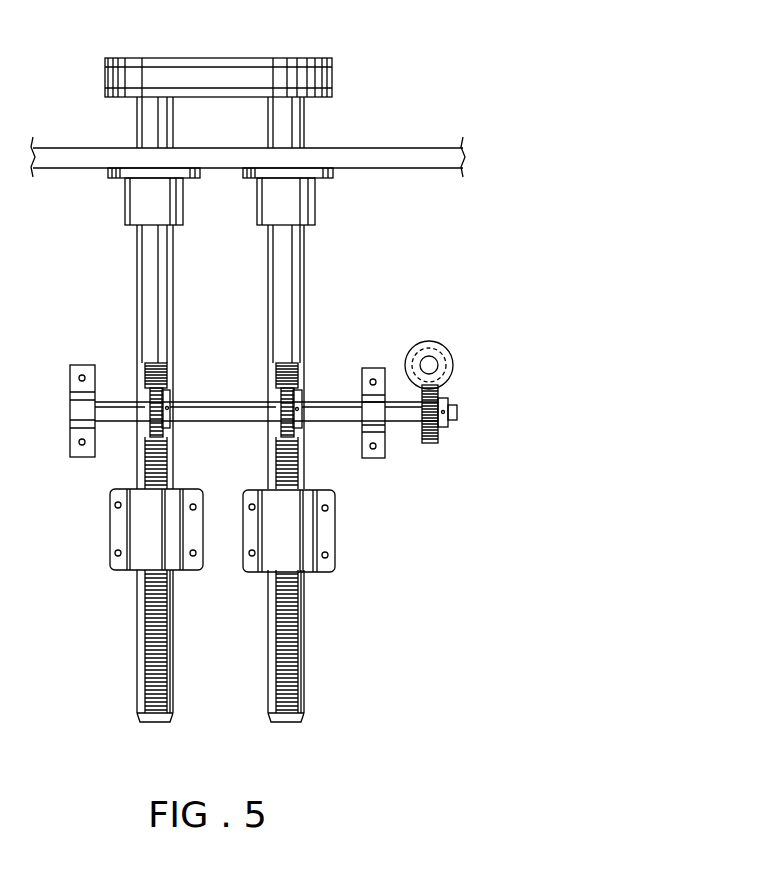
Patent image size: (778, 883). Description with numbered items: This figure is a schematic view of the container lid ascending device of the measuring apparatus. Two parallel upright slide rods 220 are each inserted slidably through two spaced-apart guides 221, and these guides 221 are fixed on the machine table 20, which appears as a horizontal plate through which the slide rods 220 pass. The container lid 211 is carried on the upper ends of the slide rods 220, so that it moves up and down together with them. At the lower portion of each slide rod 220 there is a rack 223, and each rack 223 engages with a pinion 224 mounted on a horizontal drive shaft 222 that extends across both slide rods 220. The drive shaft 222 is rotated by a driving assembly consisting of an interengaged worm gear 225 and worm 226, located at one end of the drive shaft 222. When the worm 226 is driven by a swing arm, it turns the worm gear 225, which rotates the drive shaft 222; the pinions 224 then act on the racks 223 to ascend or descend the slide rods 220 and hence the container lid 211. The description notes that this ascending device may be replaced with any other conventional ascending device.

The machine table 20 is at (393, 153).
The container lid 211 is at (228, 67).
The slide rods 220 is at (280, 308).
The guides 221 is at (130, 203).
The drive shaft 222 is at (400, 423).
The rack 223 is at (285, 620).
The pinion 224 is at (157, 373).
The worm gear 225 is at (430, 445).
The worm 226 is at (428, 341).